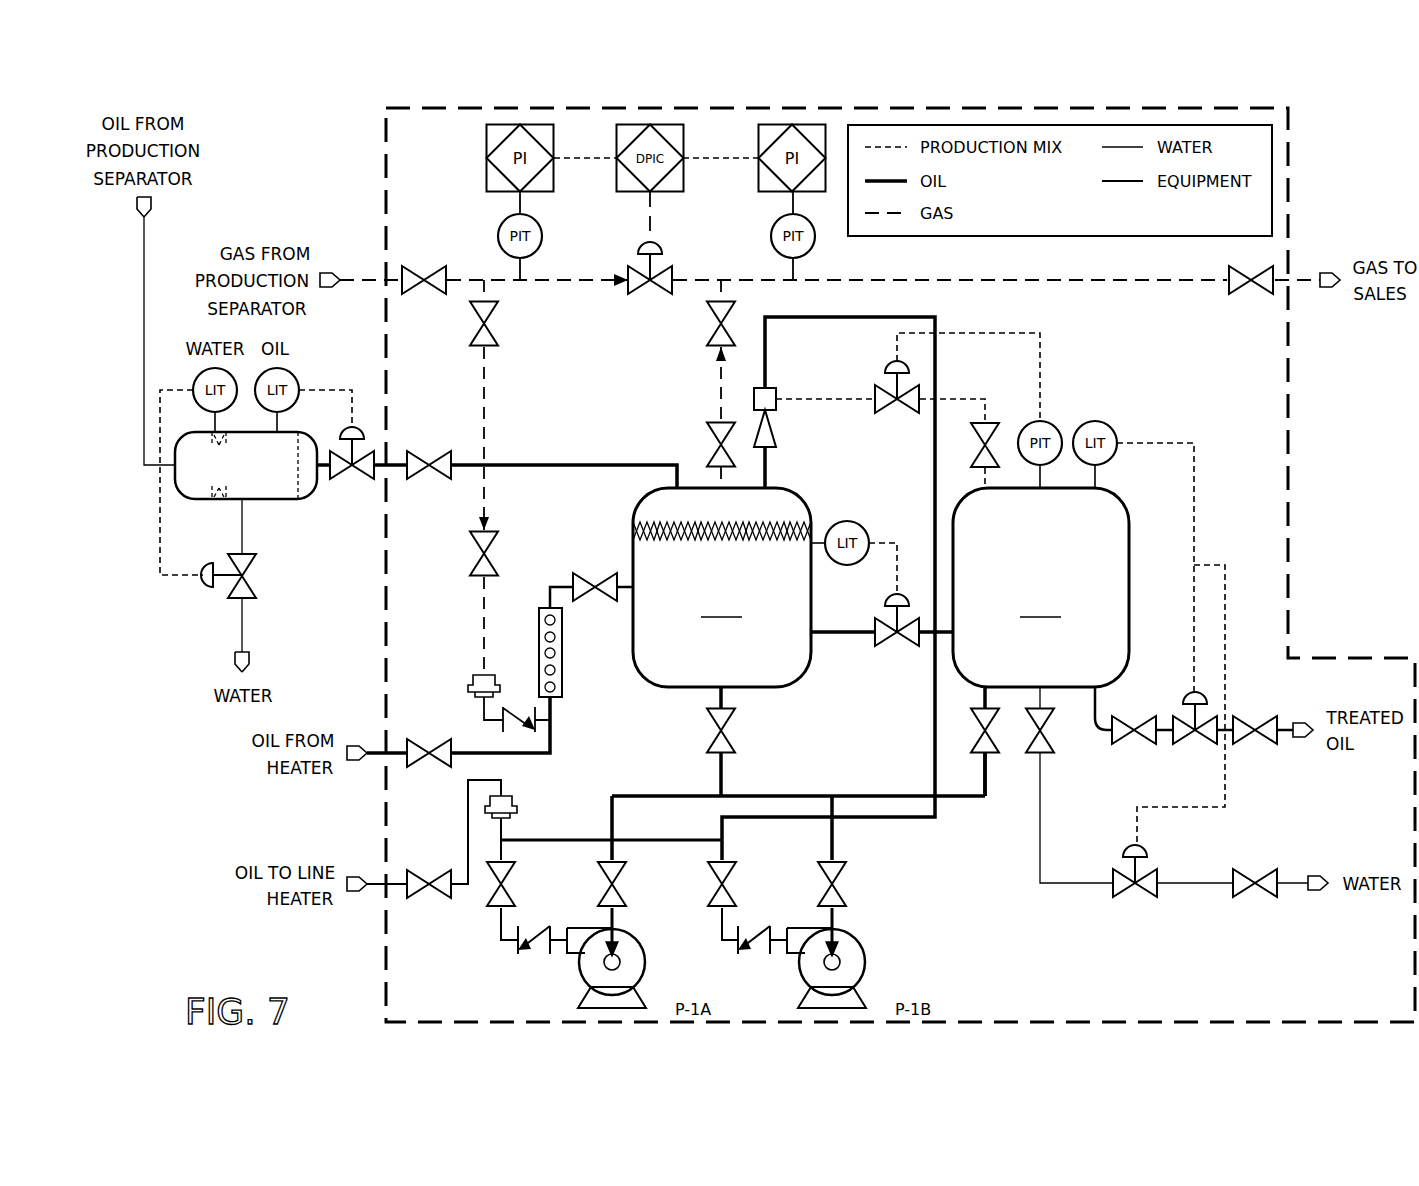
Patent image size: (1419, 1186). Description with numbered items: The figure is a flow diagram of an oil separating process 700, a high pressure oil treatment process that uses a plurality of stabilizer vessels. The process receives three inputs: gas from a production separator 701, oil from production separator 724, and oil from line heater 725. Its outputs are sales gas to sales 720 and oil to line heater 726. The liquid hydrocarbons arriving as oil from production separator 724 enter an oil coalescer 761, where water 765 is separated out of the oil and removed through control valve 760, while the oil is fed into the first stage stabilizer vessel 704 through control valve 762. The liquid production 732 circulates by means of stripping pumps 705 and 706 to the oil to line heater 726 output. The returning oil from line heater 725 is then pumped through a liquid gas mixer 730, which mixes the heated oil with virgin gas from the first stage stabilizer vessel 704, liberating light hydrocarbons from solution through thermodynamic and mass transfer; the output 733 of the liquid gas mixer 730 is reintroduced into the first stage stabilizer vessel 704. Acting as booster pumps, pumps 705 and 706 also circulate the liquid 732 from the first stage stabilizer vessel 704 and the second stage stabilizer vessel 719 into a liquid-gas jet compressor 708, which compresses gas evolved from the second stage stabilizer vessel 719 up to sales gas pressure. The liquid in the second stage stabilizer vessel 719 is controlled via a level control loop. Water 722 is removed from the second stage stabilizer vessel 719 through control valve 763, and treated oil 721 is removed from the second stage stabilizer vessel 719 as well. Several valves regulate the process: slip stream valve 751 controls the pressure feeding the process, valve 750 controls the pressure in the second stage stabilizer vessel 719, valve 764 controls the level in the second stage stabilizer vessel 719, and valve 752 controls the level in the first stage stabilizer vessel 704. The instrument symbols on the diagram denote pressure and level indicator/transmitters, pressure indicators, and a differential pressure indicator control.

The oil separating process 700 is at (228, 758).
The gas from a production separator 701 is at (337, 271).
The first stage stabilizer vessel 704 is at (722, 587).
The stripping pump 705 is at (646, 968).
The stripping pump 706 is at (866, 968).
The liquid-gas jet compressor 708 is at (777, 427).
The second stage stabilizer vessel 719 is at (1041, 587).
The sales gas to sales 720 is at (1332, 271).
The treated oil 721 is at (1300, 740).
The water 722 is at (1316, 893).
The oil from production separator 724 is at (152, 203).
The oil from line heater 725 is at (361, 742).
The oil to line heater 726 is at (361, 896).
The liquid gas mixer 730 is at (565, 680).
The liquid production 732 is at (707, 742).
The output of the liquid gas mixer 733 is at (566, 587).
The valve 750 is at (886, 412).
The slip stream valve 751 is at (638, 287).
The valve 752 is at (884, 648).
The control valve 760 is at (232, 589).
The oil coalescer 761 is at (276, 500).
The control valve 762 is at (345, 480).
The control valve 763 is at (1139, 899).
The valve 764 is at (1181, 745).
The water 765 is at (237, 660).